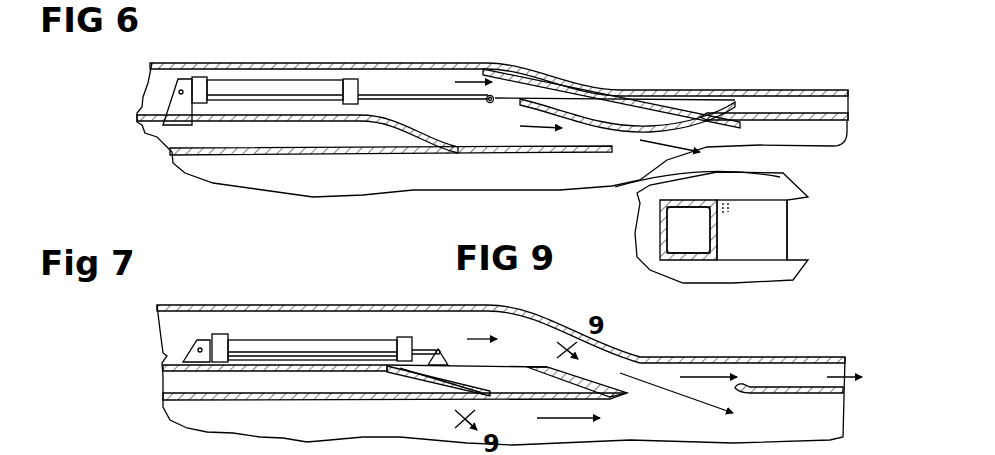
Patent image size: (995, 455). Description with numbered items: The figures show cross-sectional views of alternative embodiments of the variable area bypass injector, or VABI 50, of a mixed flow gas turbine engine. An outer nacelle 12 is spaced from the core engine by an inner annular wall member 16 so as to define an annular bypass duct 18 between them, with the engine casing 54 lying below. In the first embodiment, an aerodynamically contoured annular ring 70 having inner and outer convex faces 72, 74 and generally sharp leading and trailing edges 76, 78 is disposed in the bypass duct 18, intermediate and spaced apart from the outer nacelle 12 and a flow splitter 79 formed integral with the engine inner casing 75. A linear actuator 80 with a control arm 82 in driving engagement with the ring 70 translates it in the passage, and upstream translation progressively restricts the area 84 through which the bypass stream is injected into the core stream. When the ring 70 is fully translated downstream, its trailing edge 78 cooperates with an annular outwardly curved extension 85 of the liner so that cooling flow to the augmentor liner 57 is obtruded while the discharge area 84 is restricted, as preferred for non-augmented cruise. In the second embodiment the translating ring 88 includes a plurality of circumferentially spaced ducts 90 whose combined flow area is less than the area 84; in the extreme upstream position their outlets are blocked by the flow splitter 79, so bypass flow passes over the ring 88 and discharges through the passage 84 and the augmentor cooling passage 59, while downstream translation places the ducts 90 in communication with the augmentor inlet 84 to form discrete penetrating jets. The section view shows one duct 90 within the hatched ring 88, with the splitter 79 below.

In FIG. 6, the outer nacelle 12 is at (325, 67).
In FIG. 7, the outer nacelle 12 is at (332, 305).
In FIG. 6, the inner annular wall member 16 is at (143, 101).
In FIG. 7, the inner annular wall member 16 is at (163, 355).
In FIG. 6, the bypass duct 18 is at (322, 78).
In FIG. 7, the bypass duct 18 is at (352, 333).
In FIG. 6, the VABI 50 is at (583, 70).
In FIG. 6, the core engine casing 54 is at (400, 192).
In FIG. 7, the core engine casing 54 is at (383, 435).
In FIG. 6, the augmentor liner 57 is at (807, 123).
In FIG. 7, the augmentor liner 57 is at (800, 402).
In FIG. 6, the augmentor cooling passage 59 is at (808, 107).
In FIG. 7, the augmentor cooling passage 59 is at (803, 370).
In FIG. 6, the annular ring 70 is at (630, 115).
In FIG. 6, the inner convex face 72 is at (668, 100).
In FIG. 6, the outer convex face 74 is at (664, 123).
In FIG. 6, the engine inner casing 75 is at (349, 153).
In FIG. 6, the leading edge 76 is at (537, 80).
In FIG. 6, the trailing edge 78 is at (733, 122).
In FIG. 6, the flow splitter 79 is at (576, 148).
In FIG. 9, the flow splitter 79 is at (760, 268).
In FIG. 7, the flow splitter 79 is at (504, 400).
In FIG. 6, the linear actuator 80 is at (230, 87).
In FIG. 6, the control arm 82 is at (404, 93).
In FIG. 6, the bypass flow discharge area 84 is at (614, 139).
In FIG. 9, the bypass flow discharge area 84 is at (800, 241).
In FIG. 7, the bypass flow discharge area 84 is at (647, 398).
In FIG. 6, the outwardly curved extension 85 is at (729, 112).
In FIG. 9, the ring 88 is at (660, 221).
In FIG. 7, the ring 88 is at (594, 377).
In FIG. 9, the ducts 90 is at (698, 245).
In FIG. 7, the ducts 90 is at (492, 377).